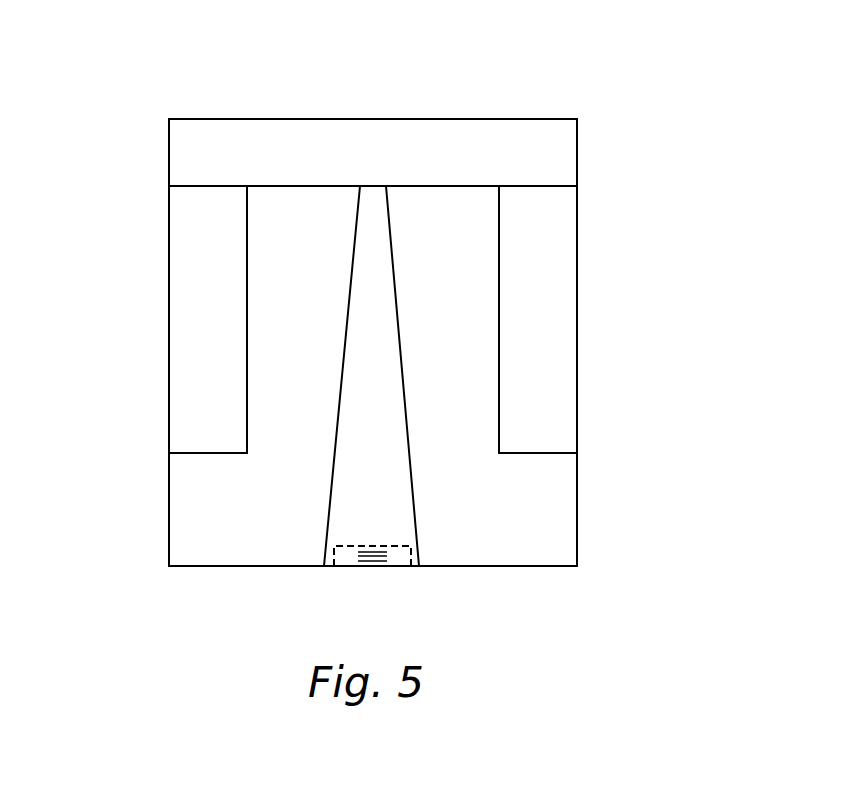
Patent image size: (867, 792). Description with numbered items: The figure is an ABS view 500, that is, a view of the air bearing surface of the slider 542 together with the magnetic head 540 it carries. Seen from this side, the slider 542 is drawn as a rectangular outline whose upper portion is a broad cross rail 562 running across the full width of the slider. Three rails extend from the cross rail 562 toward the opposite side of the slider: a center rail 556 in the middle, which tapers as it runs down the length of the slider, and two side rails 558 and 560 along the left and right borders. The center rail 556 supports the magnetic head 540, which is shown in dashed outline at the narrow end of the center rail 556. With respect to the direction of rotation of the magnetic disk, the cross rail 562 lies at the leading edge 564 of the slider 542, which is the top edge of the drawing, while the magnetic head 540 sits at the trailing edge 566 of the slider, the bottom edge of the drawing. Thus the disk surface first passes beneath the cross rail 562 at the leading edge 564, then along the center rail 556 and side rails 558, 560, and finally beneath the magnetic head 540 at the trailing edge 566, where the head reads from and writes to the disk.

The ABS view 500 is at (630, 88).
The slider 542 is at (160, 519).
The cross rail 562 is at (255, 128).
The leading edge 564 is at (418, 118).
The side rail 558 is at (182, 326).
The side rail 560 is at (568, 324).
The center rail 556 is at (358, 312).
The magnetic head 540 is at (340, 568).
The trailing edge 566 is at (469, 567).